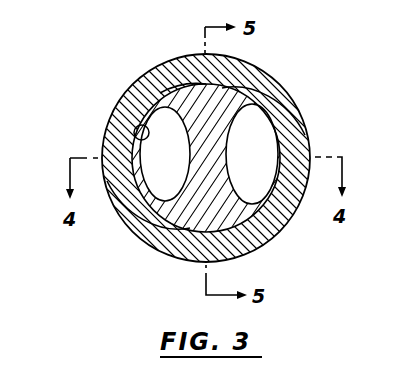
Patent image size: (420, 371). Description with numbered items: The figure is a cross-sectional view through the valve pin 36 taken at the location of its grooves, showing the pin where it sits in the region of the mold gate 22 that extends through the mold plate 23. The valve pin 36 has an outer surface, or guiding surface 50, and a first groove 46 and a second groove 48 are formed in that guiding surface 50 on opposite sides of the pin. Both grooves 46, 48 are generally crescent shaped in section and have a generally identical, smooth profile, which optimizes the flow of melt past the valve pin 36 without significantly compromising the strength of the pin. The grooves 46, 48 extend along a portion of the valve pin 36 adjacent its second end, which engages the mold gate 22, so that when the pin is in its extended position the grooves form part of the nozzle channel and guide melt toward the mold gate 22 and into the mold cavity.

The mold gate 22 is at (122, 131).
The mold plate 23 is at (297, 124).
The valve pin 36 is at (165, 100).
The first groove 46 is at (148, 224).
The second groove 48 is at (278, 231).
The guiding surface 50 is at (270, 93).